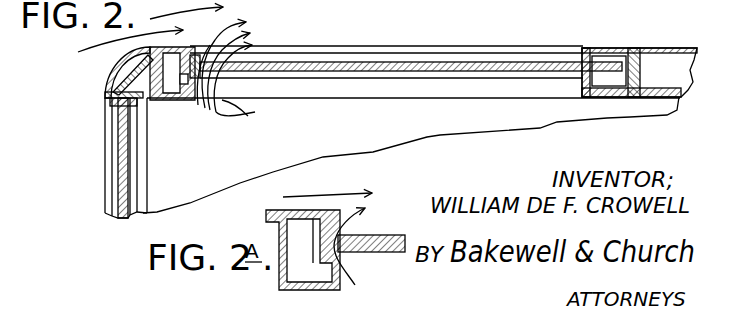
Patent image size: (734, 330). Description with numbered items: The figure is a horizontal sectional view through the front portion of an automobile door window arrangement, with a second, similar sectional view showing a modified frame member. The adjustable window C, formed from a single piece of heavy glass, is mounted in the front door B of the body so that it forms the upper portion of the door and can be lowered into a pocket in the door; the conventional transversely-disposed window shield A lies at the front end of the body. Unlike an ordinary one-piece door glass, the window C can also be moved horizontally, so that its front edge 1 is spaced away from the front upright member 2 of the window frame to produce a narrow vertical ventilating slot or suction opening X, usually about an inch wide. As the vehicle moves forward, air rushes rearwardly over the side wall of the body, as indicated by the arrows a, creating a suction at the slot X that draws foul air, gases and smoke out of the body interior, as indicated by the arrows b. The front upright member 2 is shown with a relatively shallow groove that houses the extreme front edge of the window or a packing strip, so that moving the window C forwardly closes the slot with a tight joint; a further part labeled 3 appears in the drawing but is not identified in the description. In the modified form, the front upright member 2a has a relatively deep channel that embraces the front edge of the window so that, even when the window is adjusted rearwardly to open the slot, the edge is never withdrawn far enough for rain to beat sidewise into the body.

In FIG. 2, the window shield A is at (118, 138).
In FIG. 2, the front edge 1 is at (216, 62).
In FIG. 2, the front upright member 2 is at (177, 100).
In FIG. 2A, the front upright member 2a is at (280, 289).
In FIG. 2, the end block 3 is at (598, 68).
In FIG. 2A, the front door B is at (419, 250).
In FIG. 2, the adjustable window C is at (331, 62).
In FIG. 2A, the adjustable window C is at (376, 243).
In FIG. 2, the ventilating slot X is at (251, 119).
In FIG. 2, the arrows a is at (160, 18).
In FIG. 2A, the arrows a is at (312, 197).
In FIG. 2, the arrows b is at (226, 61).
In FIG. 2A, the arrows b is at (352, 267).